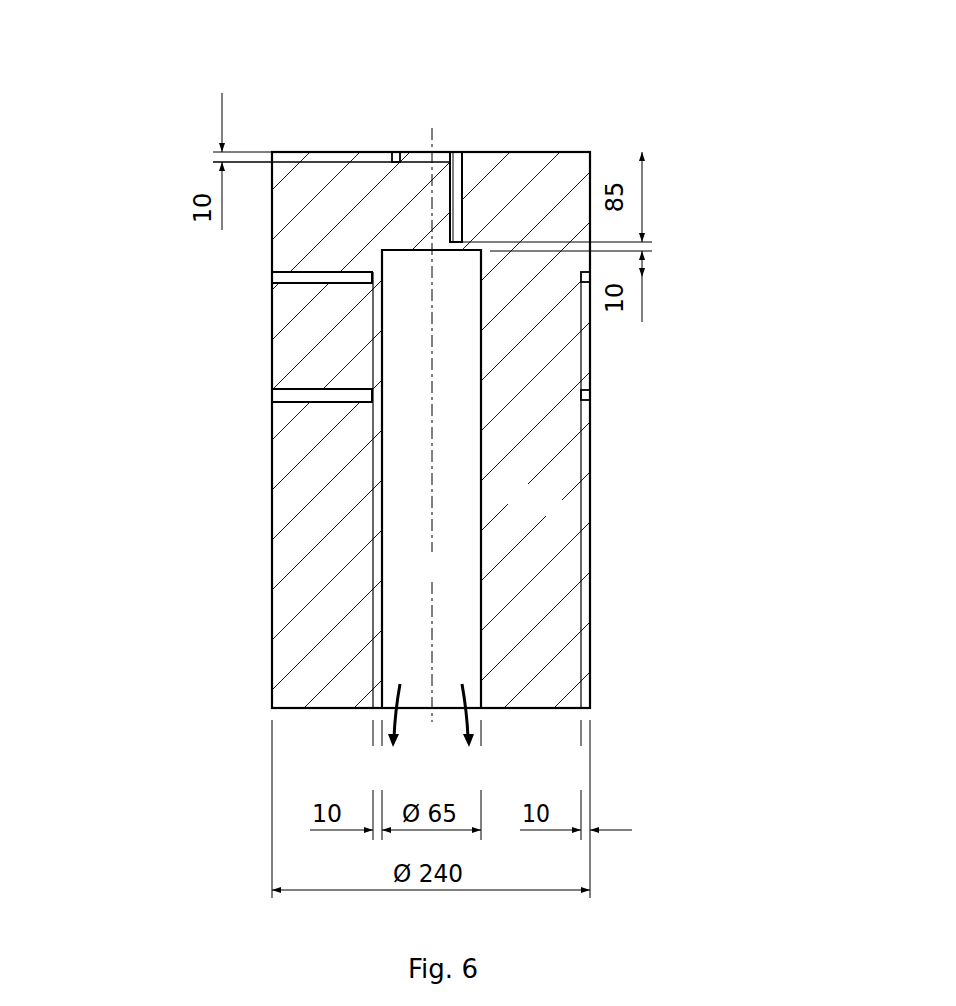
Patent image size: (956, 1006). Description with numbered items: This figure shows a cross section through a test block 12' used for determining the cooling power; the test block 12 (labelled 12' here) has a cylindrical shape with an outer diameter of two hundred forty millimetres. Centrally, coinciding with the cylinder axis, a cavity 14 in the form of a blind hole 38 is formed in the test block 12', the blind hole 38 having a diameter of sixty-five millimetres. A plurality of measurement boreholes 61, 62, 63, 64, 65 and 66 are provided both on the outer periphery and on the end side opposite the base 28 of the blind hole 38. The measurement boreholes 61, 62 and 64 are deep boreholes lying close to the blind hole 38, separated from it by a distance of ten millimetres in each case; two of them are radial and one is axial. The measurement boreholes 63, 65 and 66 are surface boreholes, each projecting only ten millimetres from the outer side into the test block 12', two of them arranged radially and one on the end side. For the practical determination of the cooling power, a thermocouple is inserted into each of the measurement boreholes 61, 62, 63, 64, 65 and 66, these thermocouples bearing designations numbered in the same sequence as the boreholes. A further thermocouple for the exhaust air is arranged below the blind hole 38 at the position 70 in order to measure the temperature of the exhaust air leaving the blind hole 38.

The test block 12' is at (401, 430).
The test block 12 is at (401, 430).
The cavity 14 is at (431, 425).
The blind hole 38 is at (431, 425).
The base of the blind hole 28 is at (373, 268).
The measurement borehole 61 is at (272, 397).
The measurement borehole 62 is at (272, 278).
The measurement borehole 63 is at (396, 152).
The measurement borehole 64 is at (461, 152).
The measurement borehole 65 is at (590, 278).
The measurement borehole 66 is at (590, 395).
The position of thermocouple TE_A 70 is at (427, 733).